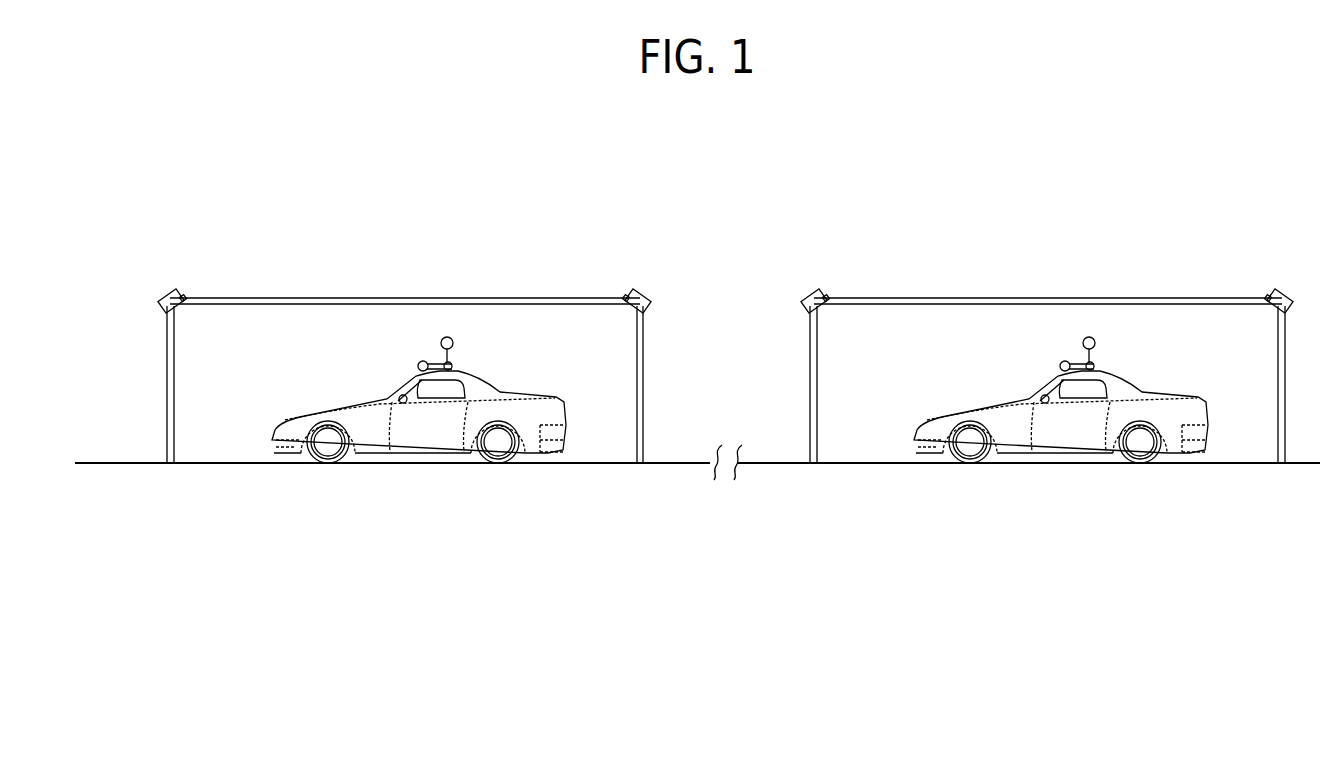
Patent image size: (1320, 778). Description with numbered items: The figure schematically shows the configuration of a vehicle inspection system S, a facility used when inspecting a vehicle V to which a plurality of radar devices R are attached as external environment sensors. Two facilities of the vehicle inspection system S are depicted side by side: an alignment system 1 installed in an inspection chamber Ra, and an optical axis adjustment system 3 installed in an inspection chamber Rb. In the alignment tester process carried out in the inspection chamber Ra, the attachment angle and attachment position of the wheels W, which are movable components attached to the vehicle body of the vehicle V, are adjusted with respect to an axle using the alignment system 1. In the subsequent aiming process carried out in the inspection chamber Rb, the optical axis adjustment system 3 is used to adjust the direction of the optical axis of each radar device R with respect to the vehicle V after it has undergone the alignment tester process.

The alignment system 1 is at (1207, 277).
The optical axis adjustment system 3 is at (576, 283).
The vehicle inspection system S is at (353, 184).
The inspection chamber Ra is at (920, 346).
The inspection chamber Rb is at (283, 346).
The vehicle V is at (749, 421).
The radar device R is at (296, 440).
The wheel W is at (1055, 477).